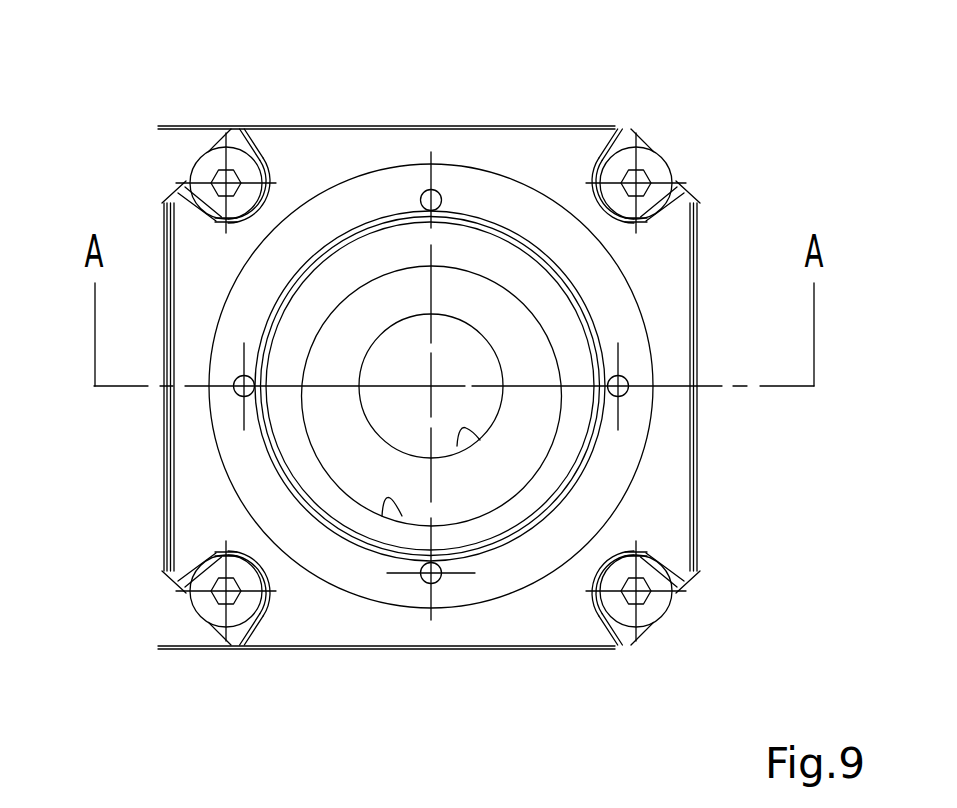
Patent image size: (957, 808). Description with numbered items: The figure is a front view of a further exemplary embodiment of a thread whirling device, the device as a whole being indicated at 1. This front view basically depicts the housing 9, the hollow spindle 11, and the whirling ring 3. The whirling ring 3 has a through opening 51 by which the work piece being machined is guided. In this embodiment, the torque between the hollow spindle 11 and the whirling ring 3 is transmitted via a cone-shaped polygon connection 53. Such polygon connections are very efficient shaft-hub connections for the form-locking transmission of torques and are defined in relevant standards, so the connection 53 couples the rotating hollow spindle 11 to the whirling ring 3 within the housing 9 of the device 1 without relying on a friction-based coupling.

The device 1 is at (133, 175).
The whirling ring 3 is at (482, 298).
The housing 9 is at (290, 638).
The hollow spindle 11 is at (285, 428).
The through opening 51 is at (458, 443).
The cone-shaped polygon connection 53 is at (383, 513).